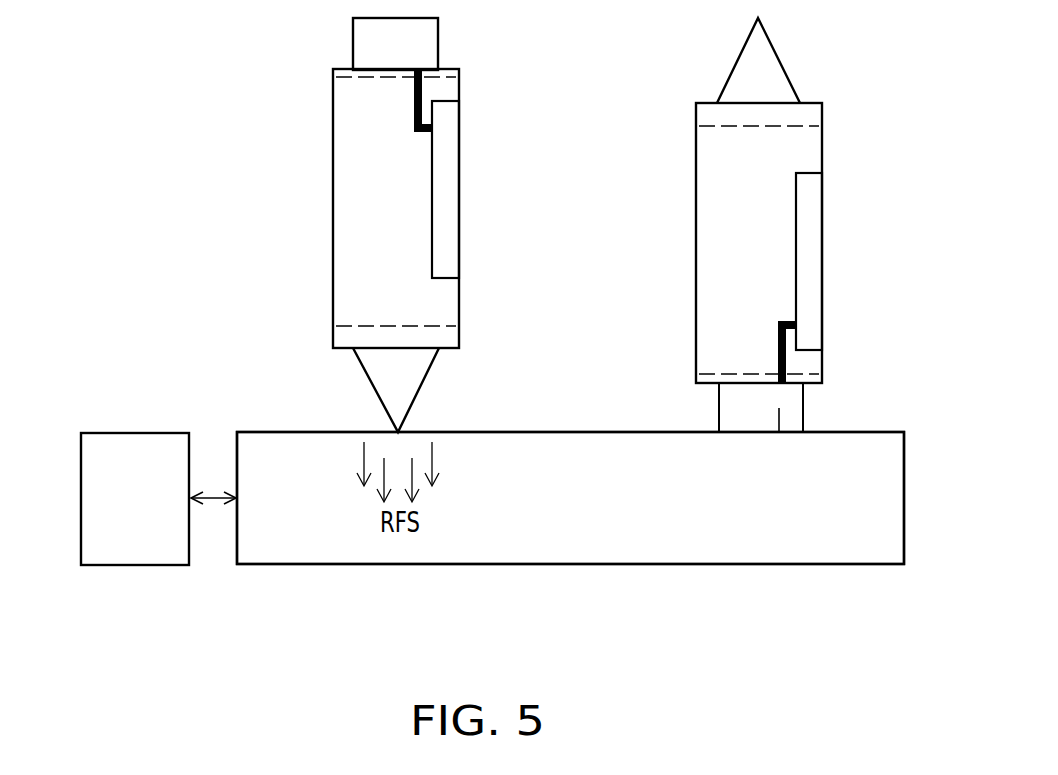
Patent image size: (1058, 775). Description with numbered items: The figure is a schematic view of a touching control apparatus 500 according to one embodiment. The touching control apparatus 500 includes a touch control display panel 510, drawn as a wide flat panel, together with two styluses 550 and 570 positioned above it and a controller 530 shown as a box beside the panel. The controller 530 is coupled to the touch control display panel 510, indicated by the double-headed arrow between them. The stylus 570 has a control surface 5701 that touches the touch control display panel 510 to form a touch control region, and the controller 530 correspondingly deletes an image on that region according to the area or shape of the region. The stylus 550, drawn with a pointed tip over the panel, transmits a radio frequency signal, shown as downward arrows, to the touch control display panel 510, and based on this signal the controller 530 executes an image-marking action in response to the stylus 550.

The touching control apparatus 500 is at (893, 622).
The touch control display panel 510 is at (735, 543).
The controller 530 is at (134, 433).
The stylus 550 is at (459, 303).
The stylus 570 is at (822, 146).
The control surface 5701 is at (779, 432).